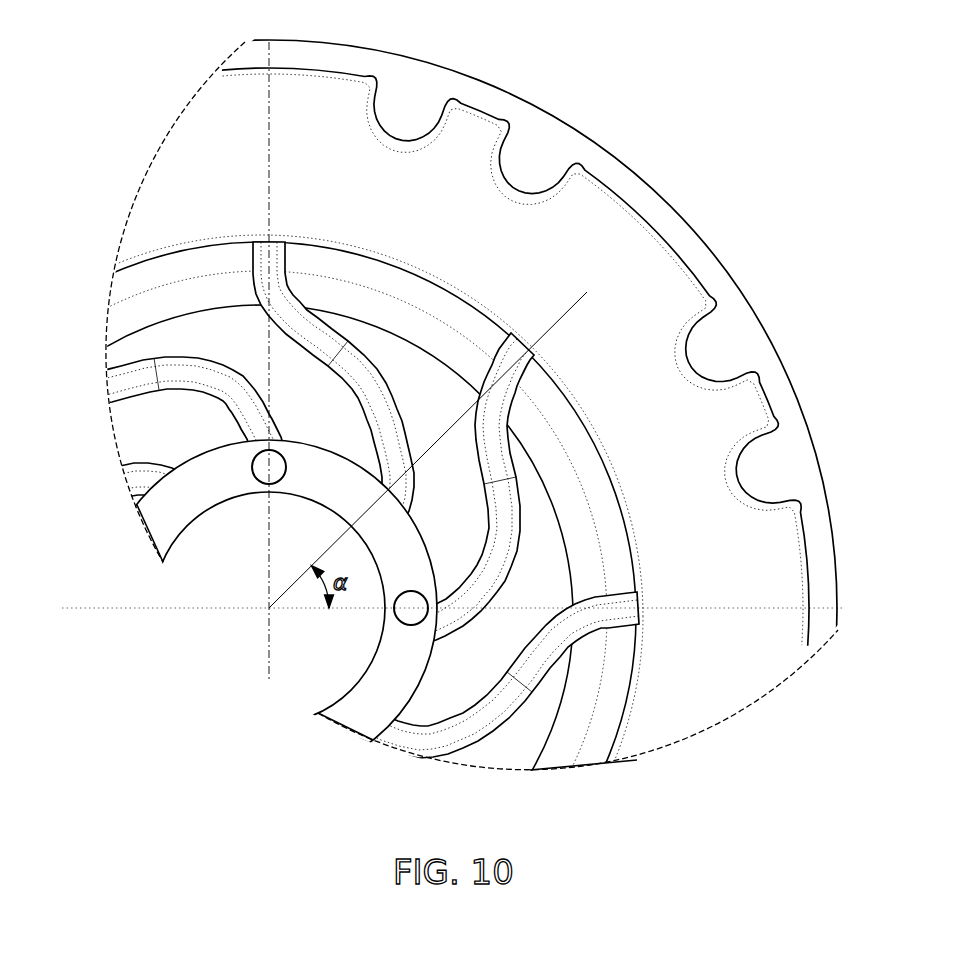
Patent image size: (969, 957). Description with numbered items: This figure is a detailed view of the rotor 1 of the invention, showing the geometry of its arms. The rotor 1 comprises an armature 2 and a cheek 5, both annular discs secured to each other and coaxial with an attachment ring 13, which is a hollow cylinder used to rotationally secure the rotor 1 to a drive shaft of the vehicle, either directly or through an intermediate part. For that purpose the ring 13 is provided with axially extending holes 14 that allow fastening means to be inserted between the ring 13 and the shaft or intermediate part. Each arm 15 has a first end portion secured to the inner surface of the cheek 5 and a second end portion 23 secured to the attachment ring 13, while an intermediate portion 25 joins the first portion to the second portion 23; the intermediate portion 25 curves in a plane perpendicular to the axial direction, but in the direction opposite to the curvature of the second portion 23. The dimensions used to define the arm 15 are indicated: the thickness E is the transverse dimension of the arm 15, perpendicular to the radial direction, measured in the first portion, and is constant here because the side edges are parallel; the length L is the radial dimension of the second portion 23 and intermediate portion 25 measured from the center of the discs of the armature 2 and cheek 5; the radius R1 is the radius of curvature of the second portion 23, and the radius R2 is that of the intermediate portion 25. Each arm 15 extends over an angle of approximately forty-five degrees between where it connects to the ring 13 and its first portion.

The rotor 1 is at (628, 93).
The armature 2 is at (746, 298).
The cheek 5 is at (192, 160).
The attachment ring 13 is at (199, 526).
The holes 14 is at (286, 472).
The arm 15 is at (476, 752).
The second end portion 23 is at (424, 409).
The intermediate portion 25 is at (281, 343).
The radius of curvature of the second portion R1 is at (378, 417).
The radius of curvature of the intermediate portion R2 is at (296, 293).
The thickness of the arm E is at (554, 389).
The length of the arm L is at (275, 252).